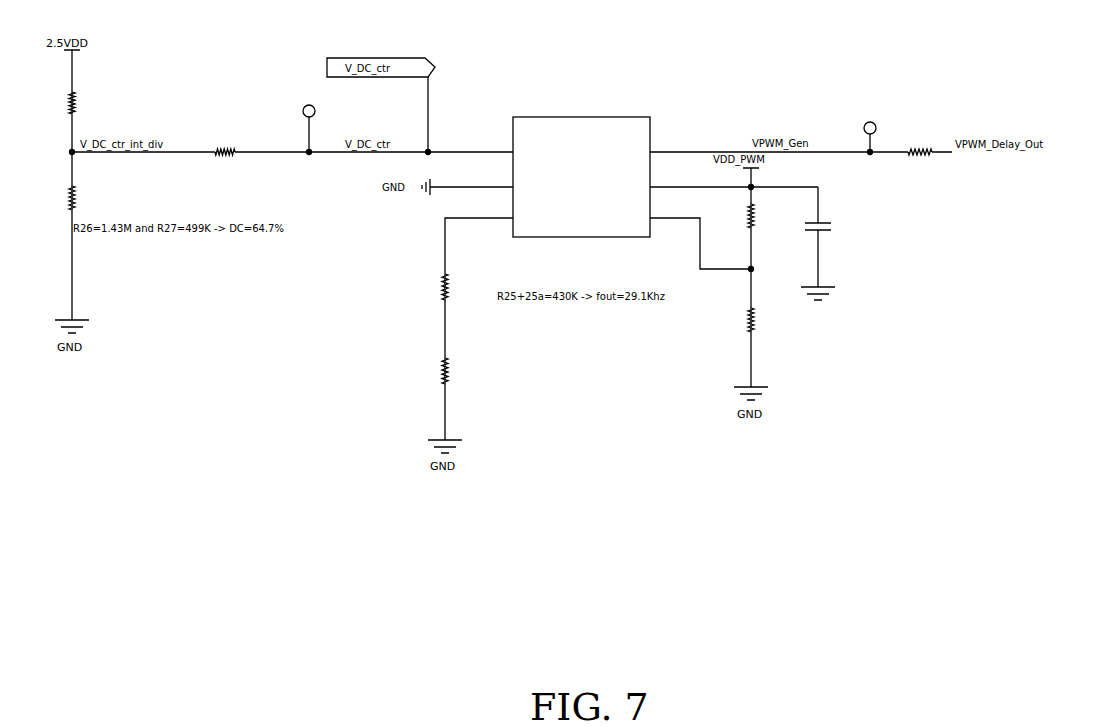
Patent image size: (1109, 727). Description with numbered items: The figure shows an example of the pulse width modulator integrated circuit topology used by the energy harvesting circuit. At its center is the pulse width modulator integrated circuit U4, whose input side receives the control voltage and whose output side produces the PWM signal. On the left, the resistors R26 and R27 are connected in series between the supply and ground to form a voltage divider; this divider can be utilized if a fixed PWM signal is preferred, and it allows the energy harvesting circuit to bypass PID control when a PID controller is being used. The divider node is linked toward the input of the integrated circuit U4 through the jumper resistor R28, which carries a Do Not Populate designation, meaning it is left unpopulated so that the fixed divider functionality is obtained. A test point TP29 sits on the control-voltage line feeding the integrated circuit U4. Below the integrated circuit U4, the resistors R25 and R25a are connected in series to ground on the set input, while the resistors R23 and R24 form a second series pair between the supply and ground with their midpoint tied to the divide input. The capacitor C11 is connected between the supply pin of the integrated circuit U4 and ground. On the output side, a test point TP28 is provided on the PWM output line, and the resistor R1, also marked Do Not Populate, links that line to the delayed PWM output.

The resistor R26 is at (90, 102).
The resistor R27 is at (87, 196).
The jumper resistor R28 is at (234, 152).
The resistor 0 ohm DNP R1 is at (932, 152).
The resistor 976k R23 is at (766, 218).
The resistor 102k R24 is at (766, 321).
The resistor 330k R25 is at (460, 285).
The resistor 100k R25a is at (460, 370).
The capacitor 0.1u 25V C11 is at (829, 254).
The LTC6992-2 voltage controlled PWM U4 is at (581, 177).
The test point 5016 TP28 is at (865, 121).
The test point 5016 TP29 is at (305, 114).